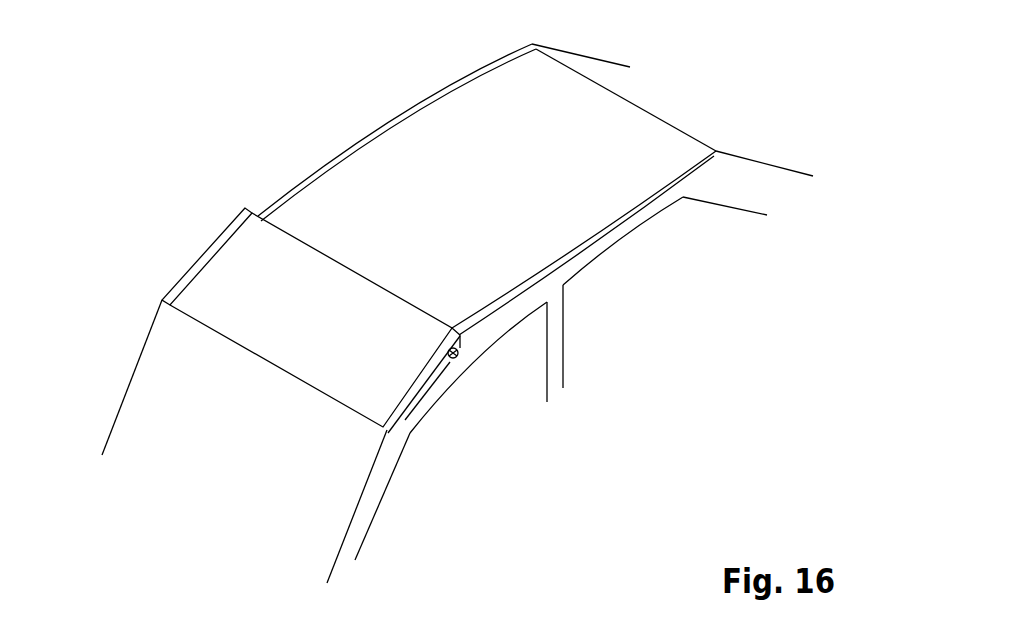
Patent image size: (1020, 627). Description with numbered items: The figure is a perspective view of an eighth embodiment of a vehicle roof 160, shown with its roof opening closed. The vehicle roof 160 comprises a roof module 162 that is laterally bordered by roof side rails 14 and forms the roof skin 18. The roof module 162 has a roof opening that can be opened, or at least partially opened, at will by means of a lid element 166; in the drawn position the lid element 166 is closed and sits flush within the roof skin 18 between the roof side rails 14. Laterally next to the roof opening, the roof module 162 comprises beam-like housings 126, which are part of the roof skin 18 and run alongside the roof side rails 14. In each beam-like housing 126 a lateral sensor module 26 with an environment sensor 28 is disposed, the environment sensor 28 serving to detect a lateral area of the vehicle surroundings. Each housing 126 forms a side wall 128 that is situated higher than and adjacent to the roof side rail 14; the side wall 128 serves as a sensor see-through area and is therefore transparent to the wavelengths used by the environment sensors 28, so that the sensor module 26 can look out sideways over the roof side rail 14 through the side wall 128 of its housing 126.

The roof side rail 14 is at (368, 136).
The roof skin 18 is at (502, 204).
The lateral sensor module 26 is at (528, 424).
The environment sensor 28 is at (458, 362).
The beam-like housing 126 is at (224, 230).
The side wall 128 is at (437, 378).
The vehicle roof 160 is at (470, 70).
The roof module 162 is at (632, 94).
The lid element 166 is at (250, 275).